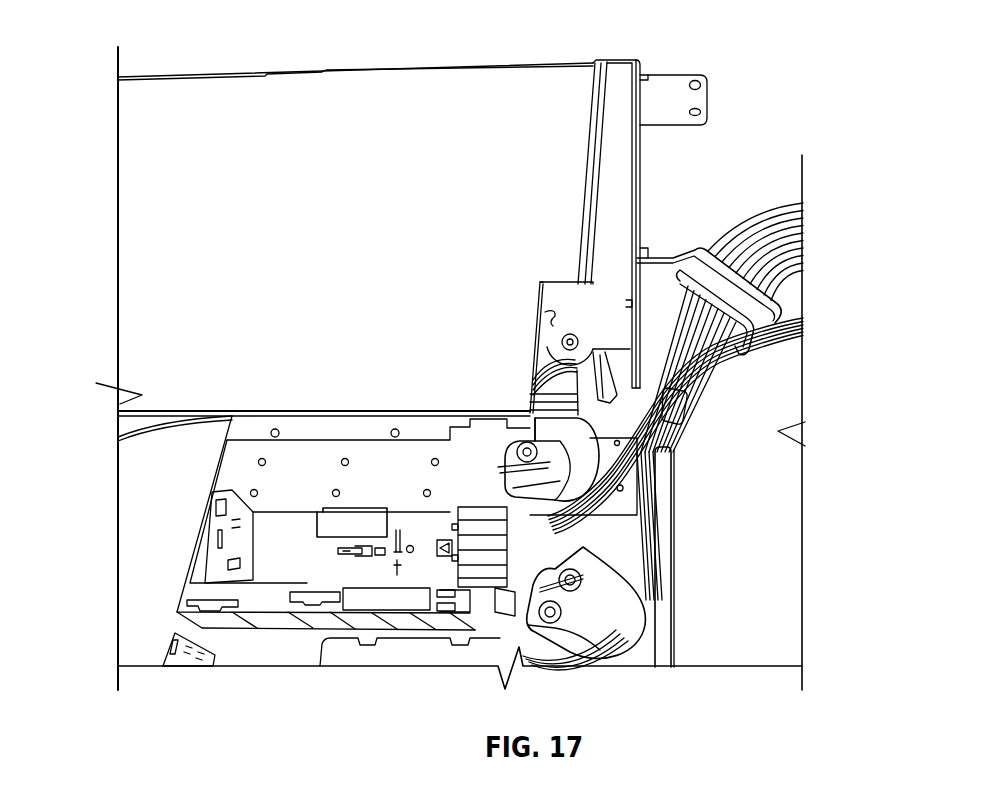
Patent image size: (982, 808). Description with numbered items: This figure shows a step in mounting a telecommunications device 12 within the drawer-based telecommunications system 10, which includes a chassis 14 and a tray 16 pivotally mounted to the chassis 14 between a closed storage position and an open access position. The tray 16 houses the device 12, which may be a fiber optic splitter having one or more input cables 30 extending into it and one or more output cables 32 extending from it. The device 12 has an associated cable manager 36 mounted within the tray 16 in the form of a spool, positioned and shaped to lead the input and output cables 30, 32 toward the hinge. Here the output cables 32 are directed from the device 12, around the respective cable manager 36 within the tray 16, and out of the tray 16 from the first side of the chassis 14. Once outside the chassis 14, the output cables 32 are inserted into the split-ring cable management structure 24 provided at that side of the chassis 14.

The telecommunications system 10 is at (758, 58).
The telecommunications device 12 is at (380, 510).
The chassis 14 is at (137, 264).
The tray 16 is at (667, 597).
The cable management structure 24 is at (702, 247).
The input cable 30 is at (177, 425).
The output cable 32 is at (762, 335).
The cable manager 36 is at (500, 480).